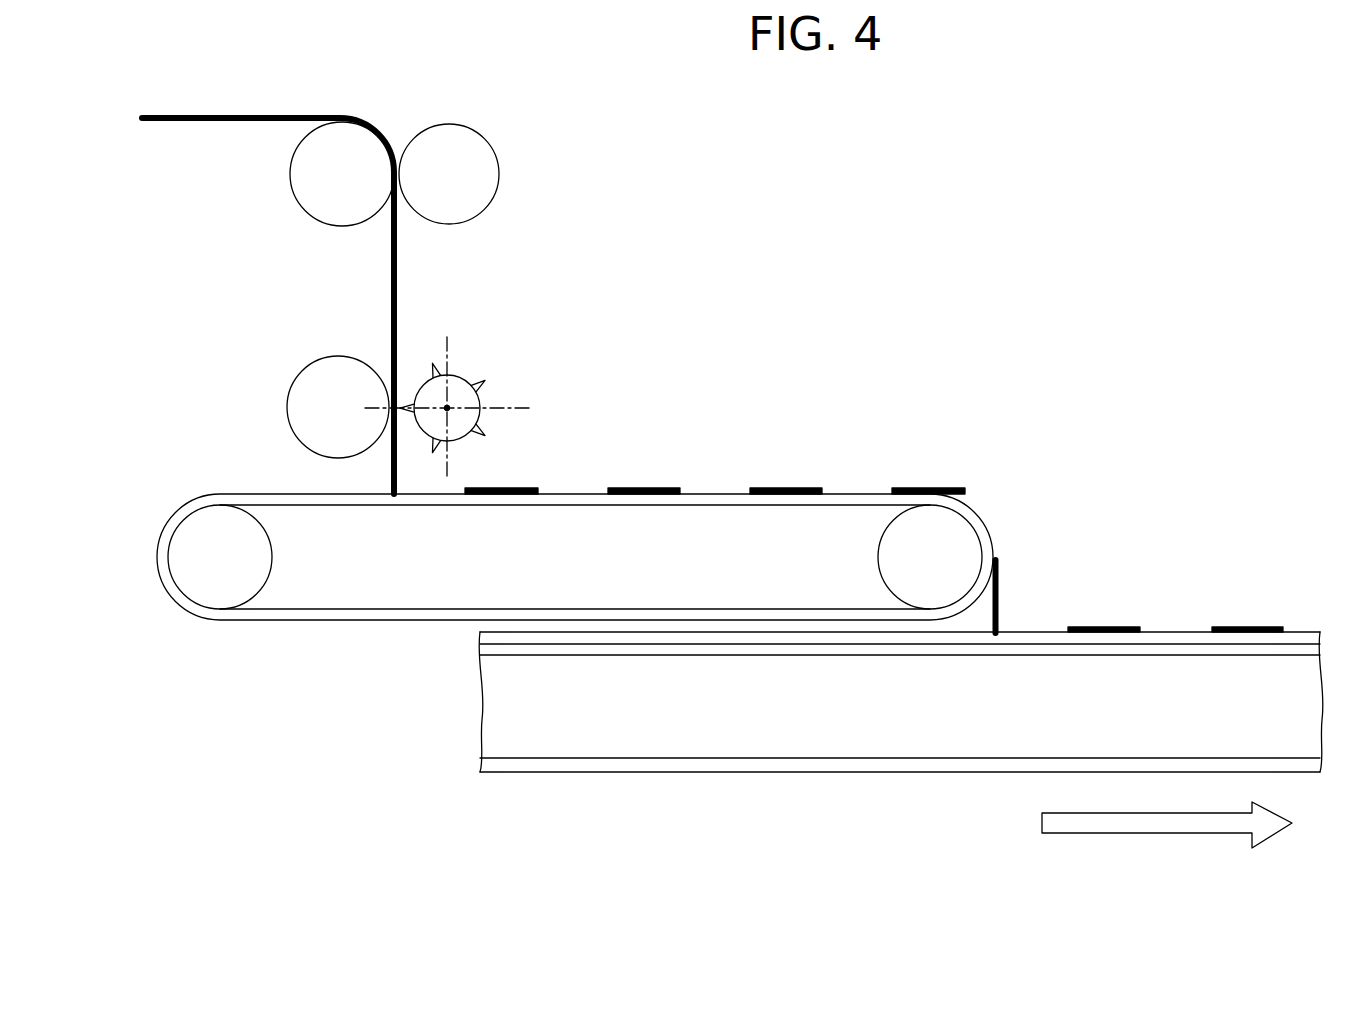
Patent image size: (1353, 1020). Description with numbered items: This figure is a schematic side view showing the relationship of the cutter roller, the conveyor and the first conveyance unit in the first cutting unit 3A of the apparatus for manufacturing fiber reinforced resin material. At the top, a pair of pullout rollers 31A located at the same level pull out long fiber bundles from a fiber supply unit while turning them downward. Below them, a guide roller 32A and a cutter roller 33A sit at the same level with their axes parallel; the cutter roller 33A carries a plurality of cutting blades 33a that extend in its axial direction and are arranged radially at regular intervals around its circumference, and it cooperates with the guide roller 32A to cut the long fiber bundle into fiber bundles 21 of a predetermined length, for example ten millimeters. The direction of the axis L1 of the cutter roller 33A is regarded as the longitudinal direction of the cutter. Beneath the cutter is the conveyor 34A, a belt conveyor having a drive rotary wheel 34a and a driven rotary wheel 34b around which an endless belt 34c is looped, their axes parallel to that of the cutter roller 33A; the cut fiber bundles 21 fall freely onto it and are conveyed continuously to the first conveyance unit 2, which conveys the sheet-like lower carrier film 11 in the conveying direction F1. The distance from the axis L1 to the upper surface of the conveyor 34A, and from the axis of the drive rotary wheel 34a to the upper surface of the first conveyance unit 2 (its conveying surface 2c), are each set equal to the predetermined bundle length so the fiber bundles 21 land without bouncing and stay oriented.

The first cutting unit 3A is at (421, 88).
The pullout rollers 31A is at (305, 174).
The guide roller 32A is at (302, 410).
The cutter roller 33A is at (470, 413).
The cutting blades 33a is at (473, 385).
The axis of the cutter roller L1 is at (487, 398).
The fiber bundles 21 is at (388, 480).
The conveyor 34A is at (350, 622).
The drive rotary wheel 34a is at (947, 553).
The driven rotary wheel 34b is at (213, 582).
The endless belt 34c is at (412, 613).
The first conveyance unit 2 is at (928, 774).
The transport surface 2c is at (752, 763).
The lower carrier film 11 is at (1298, 630).
The conveying direction F1 is at (1113, 826).